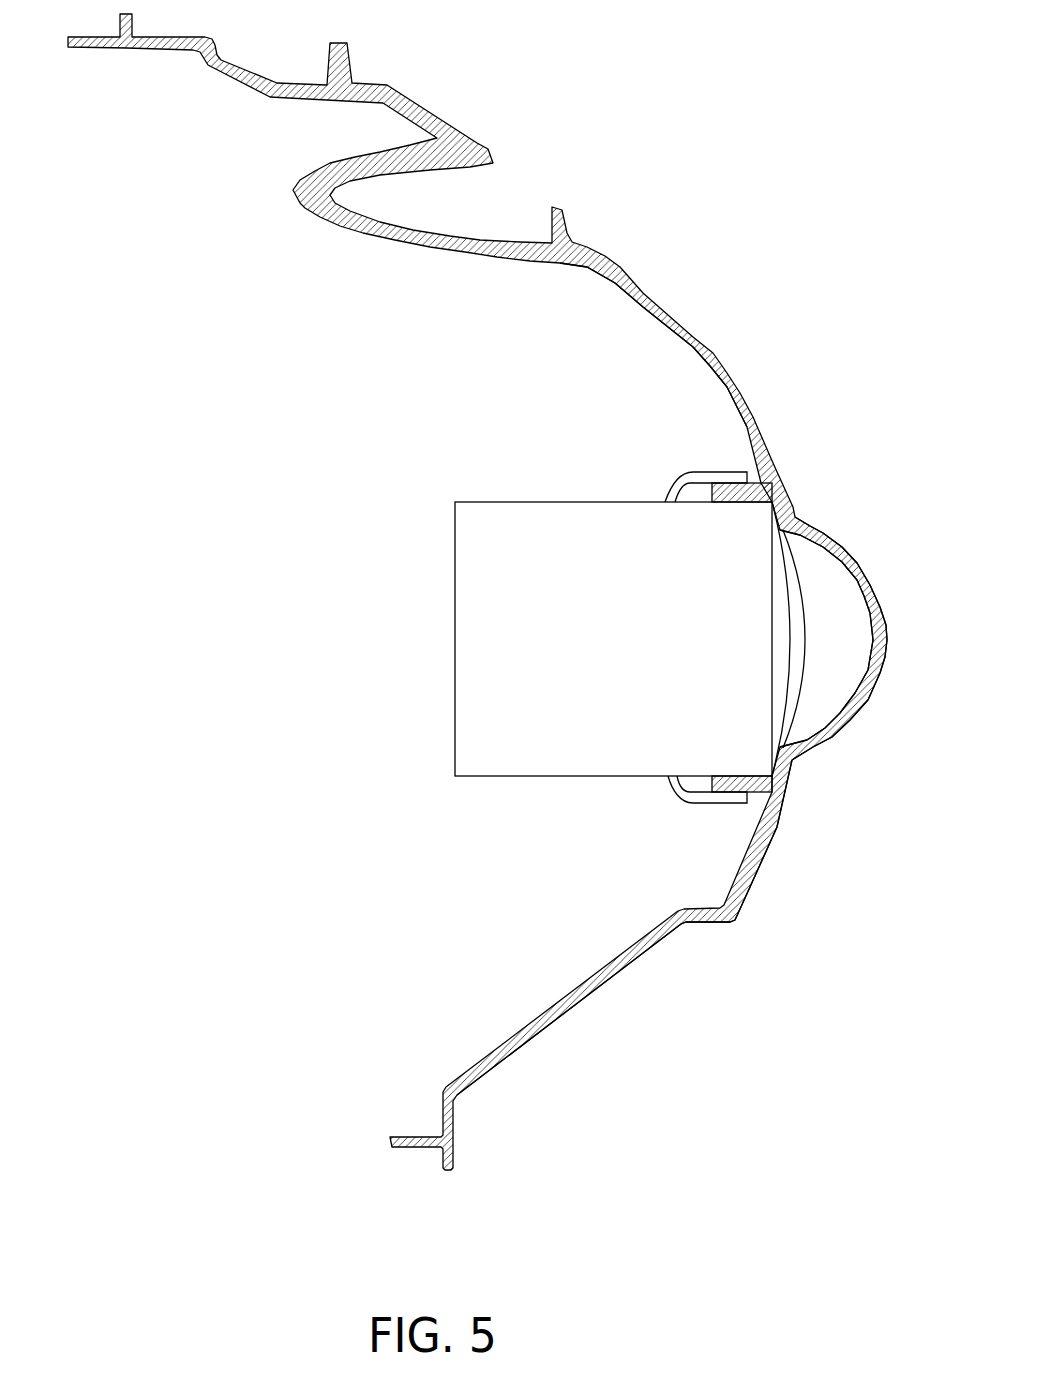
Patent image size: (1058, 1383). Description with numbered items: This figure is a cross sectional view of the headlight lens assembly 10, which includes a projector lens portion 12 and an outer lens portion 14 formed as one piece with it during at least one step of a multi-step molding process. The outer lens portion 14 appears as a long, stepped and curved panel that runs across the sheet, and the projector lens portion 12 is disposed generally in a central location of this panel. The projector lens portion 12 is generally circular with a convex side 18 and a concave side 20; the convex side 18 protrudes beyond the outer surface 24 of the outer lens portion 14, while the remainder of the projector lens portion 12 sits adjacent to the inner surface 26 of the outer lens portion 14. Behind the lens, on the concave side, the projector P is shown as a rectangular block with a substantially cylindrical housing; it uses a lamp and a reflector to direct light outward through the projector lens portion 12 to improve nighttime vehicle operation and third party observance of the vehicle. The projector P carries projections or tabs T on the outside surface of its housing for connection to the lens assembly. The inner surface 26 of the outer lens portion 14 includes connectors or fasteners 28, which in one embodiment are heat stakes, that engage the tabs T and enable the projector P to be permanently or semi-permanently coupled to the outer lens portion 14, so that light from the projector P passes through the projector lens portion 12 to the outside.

The headlight lens assembly 10 is at (736, 1082).
The projector lens portion 12 is at (845, 725).
The outer lens portion 14 is at (753, 885).
The convex side 18 is at (871, 580).
The concave side 20 is at (868, 635).
The outer surface 24 is at (687, 318).
The inner surface 26 is at (637, 305).
The fasteners 28 is at (751, 478).
The projector P is at (530, 777).
The tabs T is at (693, 470).